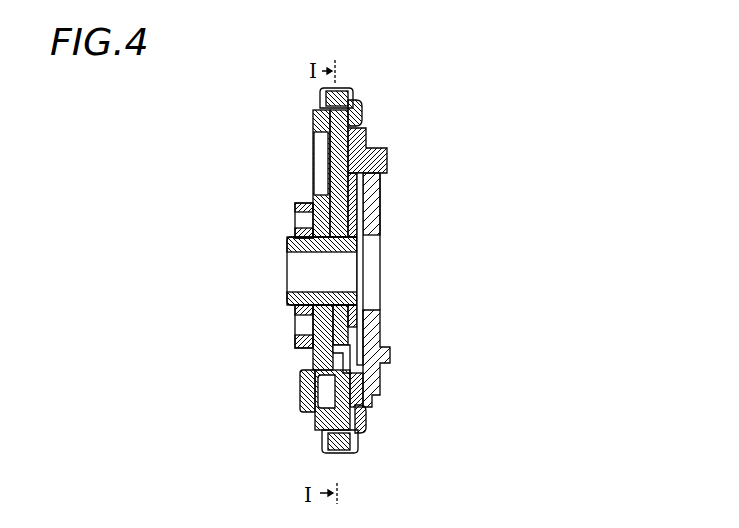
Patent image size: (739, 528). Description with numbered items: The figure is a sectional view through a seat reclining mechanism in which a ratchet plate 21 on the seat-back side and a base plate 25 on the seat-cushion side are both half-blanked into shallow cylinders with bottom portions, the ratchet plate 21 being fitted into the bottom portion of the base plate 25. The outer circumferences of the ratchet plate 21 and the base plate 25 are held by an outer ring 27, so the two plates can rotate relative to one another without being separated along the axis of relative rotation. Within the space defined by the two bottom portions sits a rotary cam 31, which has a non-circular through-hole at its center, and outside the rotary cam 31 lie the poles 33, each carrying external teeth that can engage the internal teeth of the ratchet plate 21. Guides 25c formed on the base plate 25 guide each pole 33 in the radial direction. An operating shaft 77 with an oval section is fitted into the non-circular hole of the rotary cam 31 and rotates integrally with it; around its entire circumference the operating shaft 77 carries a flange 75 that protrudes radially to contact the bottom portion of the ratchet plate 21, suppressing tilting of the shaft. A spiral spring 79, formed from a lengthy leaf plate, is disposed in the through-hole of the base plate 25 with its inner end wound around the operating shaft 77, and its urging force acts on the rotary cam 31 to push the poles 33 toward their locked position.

The outer ring 27 is at (350, 90).
The base plate 25 is at (330, 136).
The guide 25c is at (352, 166).
The spiral spring 79 is at (298, 207).
The flange 75 is at (352, 222).
The operating shaft 77 is at (288, 296).
The rotary cam 31 is at (361, 305).
The ratchet plate 21 is at (362, 337).
The pole 33 is at (356, 390).